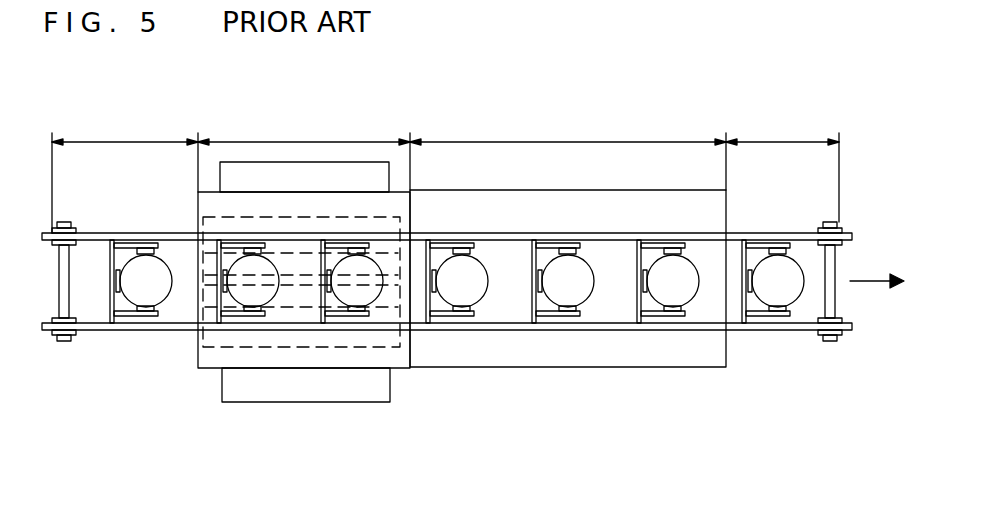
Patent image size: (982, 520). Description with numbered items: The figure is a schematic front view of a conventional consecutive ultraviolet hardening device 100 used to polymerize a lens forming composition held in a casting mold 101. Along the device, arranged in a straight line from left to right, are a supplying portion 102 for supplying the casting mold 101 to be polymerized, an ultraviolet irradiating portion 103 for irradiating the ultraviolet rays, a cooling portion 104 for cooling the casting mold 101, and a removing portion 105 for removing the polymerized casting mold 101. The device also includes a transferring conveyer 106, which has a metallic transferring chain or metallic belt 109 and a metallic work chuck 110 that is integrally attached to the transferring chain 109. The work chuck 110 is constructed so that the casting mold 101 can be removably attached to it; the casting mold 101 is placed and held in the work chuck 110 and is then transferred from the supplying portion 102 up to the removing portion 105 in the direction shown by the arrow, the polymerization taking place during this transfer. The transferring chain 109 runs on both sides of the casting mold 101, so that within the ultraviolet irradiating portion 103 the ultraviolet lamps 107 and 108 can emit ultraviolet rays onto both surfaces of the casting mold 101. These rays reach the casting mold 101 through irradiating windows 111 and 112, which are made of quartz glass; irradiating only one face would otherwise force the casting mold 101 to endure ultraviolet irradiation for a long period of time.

The consecutive ultraviolet hardening device 100 is at (473, 274).
The casting mold 101 is at (135, 293).
The supplying portion 102 is at (142, 152).
The ultraviolet irradiating portion 103 is at (315, 264).
The cooling portion 104 is at (568, 223).
The removing portion 105 is at (788, 150).
The transferring conveyer 106 is at (447, 349).
The ultraviolet lamp 107 is at (301, 355).
The ultraviolet lamp 108 is at (292, 297).
The metallic transferring chain 109 is at (515, 240).
The work chuck 110 is at (553, 312).
The irradiating window 111 is at (312, 337).
The irradiating window 112 is at (377, 348).